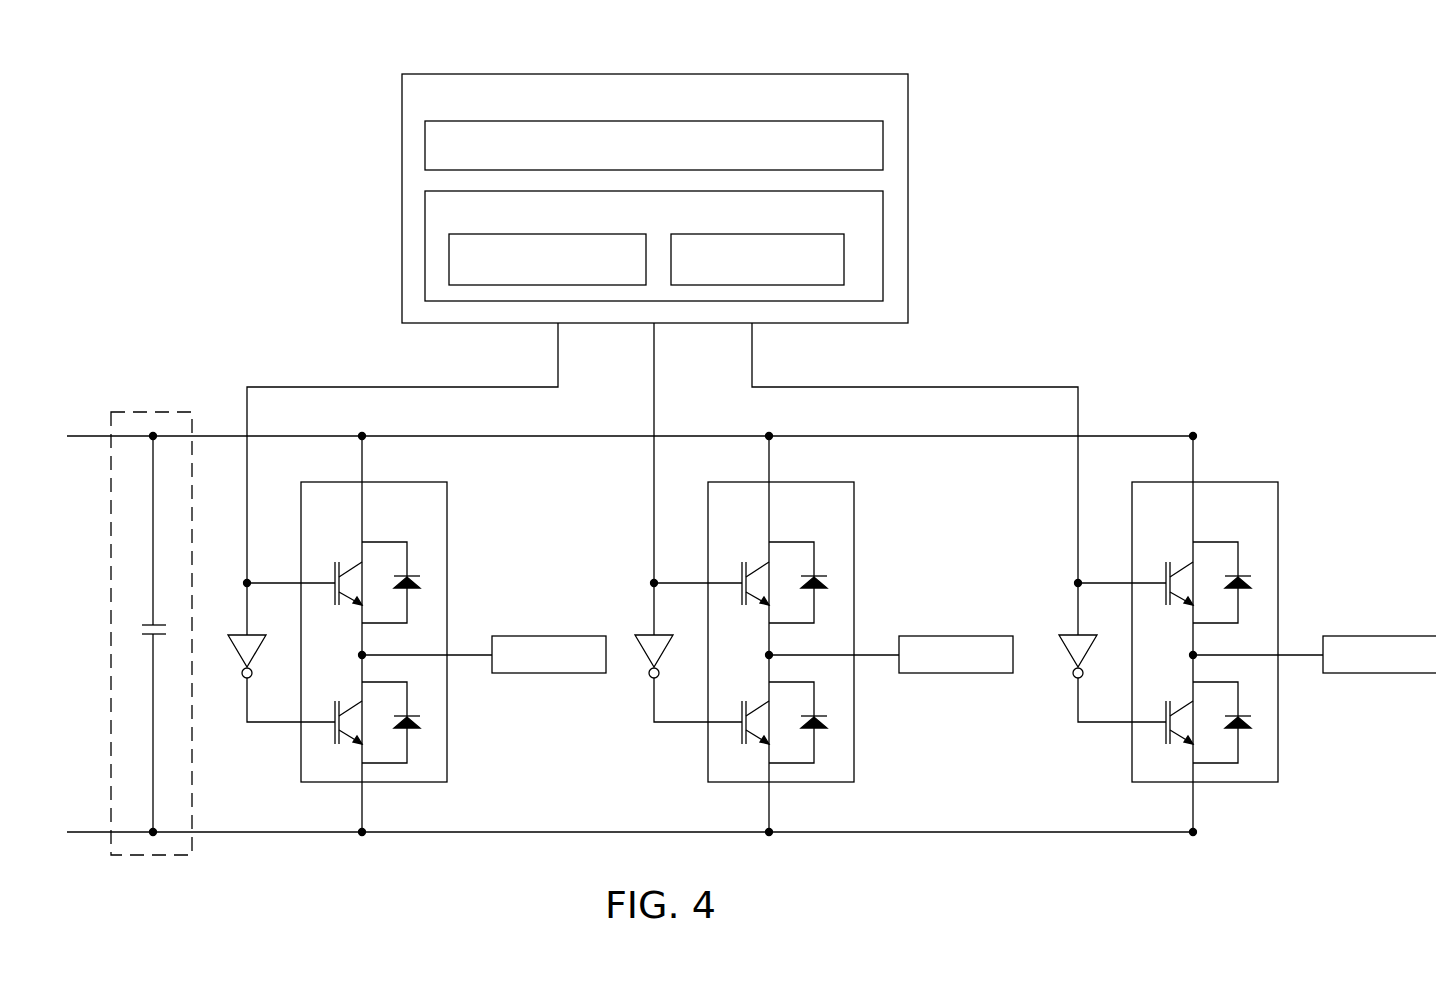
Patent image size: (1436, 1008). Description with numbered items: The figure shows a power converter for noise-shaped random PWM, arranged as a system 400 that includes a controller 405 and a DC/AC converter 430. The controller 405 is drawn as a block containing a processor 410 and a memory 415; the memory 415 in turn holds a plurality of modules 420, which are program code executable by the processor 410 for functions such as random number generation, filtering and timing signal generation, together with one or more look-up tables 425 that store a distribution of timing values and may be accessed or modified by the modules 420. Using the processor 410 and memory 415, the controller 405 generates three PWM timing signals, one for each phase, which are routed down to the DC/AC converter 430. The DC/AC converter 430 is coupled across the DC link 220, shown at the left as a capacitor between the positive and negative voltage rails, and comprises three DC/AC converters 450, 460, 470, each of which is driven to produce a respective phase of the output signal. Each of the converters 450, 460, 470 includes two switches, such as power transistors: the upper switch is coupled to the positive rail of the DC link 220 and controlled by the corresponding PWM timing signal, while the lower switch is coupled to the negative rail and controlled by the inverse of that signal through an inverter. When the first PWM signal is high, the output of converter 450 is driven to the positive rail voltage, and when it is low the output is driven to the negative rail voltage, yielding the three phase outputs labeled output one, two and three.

The system 400 is at (1098, 62).
The controller 405 is at (883, 107).
The processor 410 is at (872, 156).
The memory 415 is at (870, 221).
The modules 420 is at (635, 272).
The look-up tables 425 is at (835, 272).
The DC/AC converter 430 is at (1102, 357).
The DC link 220 is at (137, 410).
The DC/AC converter 450 is at (447, 523).
The DC/AC converter 460 is at (855, 522).
The DC/AC converter 470 is at (1280, 521).